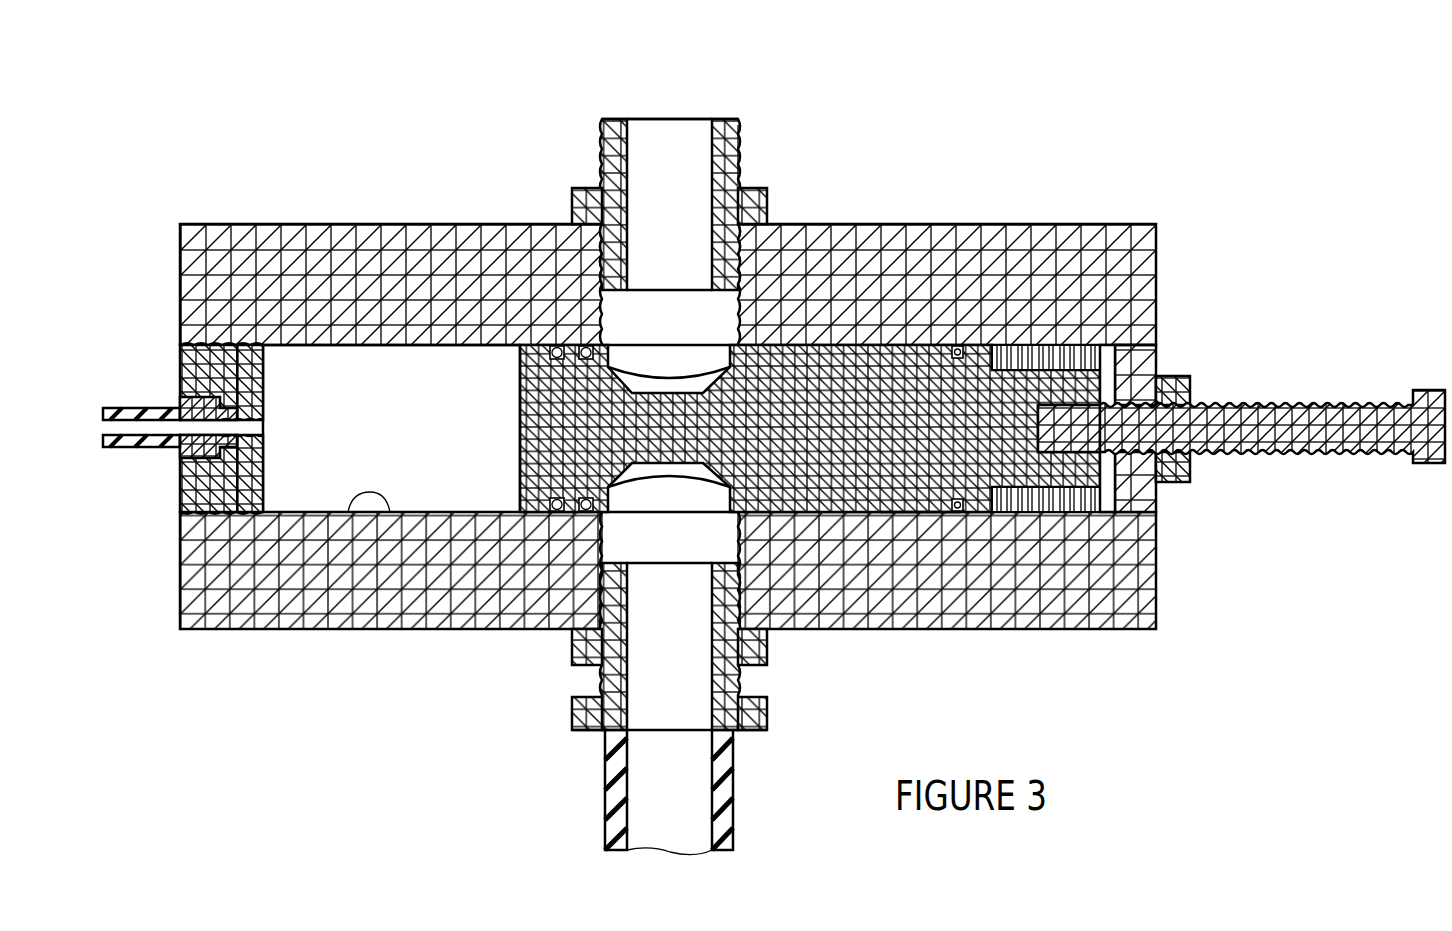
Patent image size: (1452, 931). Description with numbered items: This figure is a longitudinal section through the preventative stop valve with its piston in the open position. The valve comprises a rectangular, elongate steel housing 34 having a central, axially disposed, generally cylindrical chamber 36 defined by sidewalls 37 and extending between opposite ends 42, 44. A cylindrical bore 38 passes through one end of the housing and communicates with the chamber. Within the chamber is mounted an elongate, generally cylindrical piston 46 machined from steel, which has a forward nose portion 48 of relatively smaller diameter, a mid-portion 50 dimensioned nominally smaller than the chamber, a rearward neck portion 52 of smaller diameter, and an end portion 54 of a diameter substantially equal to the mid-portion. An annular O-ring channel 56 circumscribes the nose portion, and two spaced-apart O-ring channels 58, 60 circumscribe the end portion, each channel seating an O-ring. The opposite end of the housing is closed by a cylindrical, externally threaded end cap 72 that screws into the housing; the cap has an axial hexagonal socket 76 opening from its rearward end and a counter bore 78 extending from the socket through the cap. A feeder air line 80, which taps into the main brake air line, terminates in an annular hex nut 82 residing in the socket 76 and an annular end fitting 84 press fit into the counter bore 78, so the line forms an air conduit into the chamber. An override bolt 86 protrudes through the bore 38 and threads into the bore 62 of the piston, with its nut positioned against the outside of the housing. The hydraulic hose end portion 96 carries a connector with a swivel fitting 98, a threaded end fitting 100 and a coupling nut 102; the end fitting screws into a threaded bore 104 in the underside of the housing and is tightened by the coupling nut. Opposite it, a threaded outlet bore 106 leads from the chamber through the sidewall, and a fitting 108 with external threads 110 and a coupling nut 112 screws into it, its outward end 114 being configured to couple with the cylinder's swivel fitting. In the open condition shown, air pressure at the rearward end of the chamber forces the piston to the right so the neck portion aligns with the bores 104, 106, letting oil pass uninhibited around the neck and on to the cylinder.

The housing 34 is at (460, 252).
The chamber 36 is at (358, 390).
The sidewalls 37 is at (372, 512).
The cylindrical bore 38 is at (1160, 365).
The end of chamber 42 is at (1125, 350).
The end of chamber 44 is at (297, 345).
The piston 46 is at (925, 516).
The nose portion 48 is at (1085, 512).
The mid-portion 50 is at (920, 512).
The neck portion 52 is at (730, 545).
The end portion 54 is at (520, 430).
The O-ring channel 56 is at (963, 345).
The O-ring channel 58 is at (555, 345).
The O-ring channel 60 is at (572, 345).
The bore of piston 62 is at (1165, 482).
The end cap 72 is at (200, 475).
The hexagonal socket 76 is at (250, 458).
The counter bore 78 is at (270, 440).
The feeder air line 80 is at (115, 408).
The hex nut 82 is at (185, 370).
The end fitting 84 is at (240, 345).
The override bolt 86 is at (1300, 400).
The end portion of hose 96 is at (733, 810).
The swivel fitting 98 is at (767, 715).
The threaded end fitting 100 is at (740, 680).
The coupling nut 102 is at (767, 648).
The threaded bore 104 is at (675, 440).
The outlet bore 106 is at (702, 317).
The fitting 108 is at (745, 122).
The external threads 110 is at (740, 167).
The coupling nut 112 is at (770, 203).
The outward end 114 is at (718, 119).